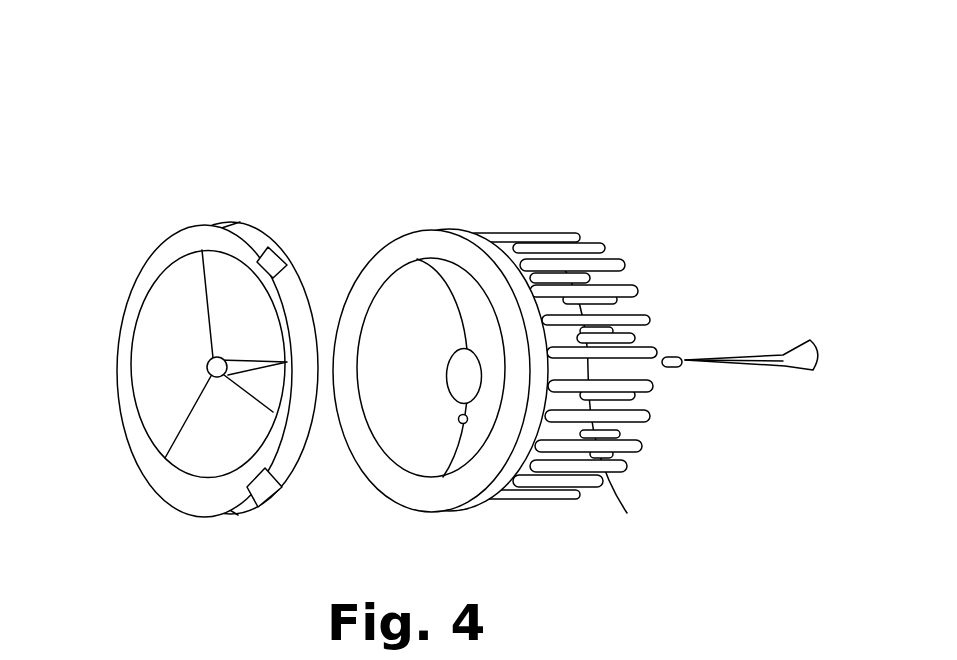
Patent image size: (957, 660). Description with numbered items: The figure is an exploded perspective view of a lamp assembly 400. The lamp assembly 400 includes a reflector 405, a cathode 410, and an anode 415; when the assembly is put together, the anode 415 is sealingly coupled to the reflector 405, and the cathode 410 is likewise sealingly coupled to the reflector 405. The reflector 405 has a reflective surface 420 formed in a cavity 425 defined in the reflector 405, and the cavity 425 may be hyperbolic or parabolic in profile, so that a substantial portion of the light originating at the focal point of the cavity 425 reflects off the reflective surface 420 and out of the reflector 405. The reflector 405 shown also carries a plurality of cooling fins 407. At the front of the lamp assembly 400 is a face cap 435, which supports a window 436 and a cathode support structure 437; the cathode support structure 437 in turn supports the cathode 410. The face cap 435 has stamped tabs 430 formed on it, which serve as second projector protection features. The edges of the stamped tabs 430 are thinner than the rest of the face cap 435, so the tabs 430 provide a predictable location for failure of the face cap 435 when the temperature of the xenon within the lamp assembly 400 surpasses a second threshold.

The lamp assembly 400 is at (272, 65).
The reflector 405 is at (543, 283).
The cooling fins 407 is at (603, 483).
The cathode 410 is at (175, 366).
The anode 415 is at (744, 357).
The reflective surface 420 is at (417, 317).
The cavity 425 is at (402, 335).
The stamped tabs 430 is at (282, 253).
The face cap 435 is at (187, 507).
The window 436 is at (150, 372).
The cathode support structure 437 is at (183, 428).